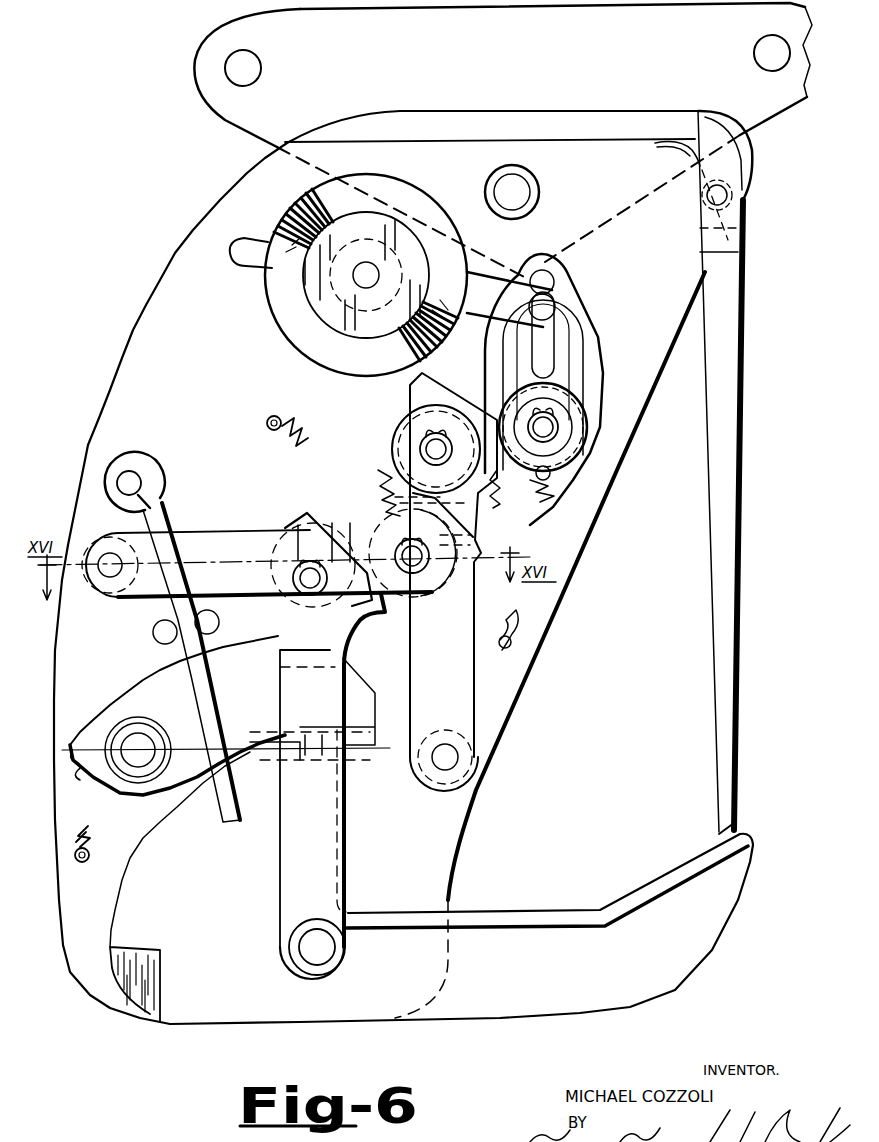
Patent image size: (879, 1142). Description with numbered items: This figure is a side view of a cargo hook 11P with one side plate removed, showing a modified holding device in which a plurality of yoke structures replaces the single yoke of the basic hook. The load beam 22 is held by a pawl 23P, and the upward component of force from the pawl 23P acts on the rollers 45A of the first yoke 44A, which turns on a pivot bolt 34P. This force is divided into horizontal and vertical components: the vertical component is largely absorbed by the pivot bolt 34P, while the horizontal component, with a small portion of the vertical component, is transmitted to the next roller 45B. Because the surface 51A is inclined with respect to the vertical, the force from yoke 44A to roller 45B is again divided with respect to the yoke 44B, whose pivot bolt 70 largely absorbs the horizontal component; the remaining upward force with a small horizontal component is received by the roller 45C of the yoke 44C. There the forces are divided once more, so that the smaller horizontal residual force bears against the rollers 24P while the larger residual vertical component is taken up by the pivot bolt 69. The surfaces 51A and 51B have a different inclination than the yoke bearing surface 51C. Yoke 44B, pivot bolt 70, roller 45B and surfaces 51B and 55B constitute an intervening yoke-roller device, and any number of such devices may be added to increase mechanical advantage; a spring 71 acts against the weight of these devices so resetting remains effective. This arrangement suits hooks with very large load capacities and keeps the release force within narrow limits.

The load beam 22 is at (520, 882).
The hook 11P is at (662, 524).
The rollers 24P is at (575, 395).
The roller 45C is at (410, 430).
The yoke 44C is at (465, 660).
The pivot bolt 69 is at (458, 762).
The surface 51B is at (385, 480).
The spring 71 is at (292, 440).
The roller 45B is at (372, 498).
The surface 51A is at (382, 594).
The yoke's bearing surface 51C is at (499, 501).
The surface 55B is at (528, 512).
The yoke 44B is at (245, 558).
The pivot bolt 70 is at (100, 590).
The rollers 45A is at (288, 592).
The pawl 23P is at (262, 700).
The pivot bolt 34P is at (172, 712).
The yoke 44A is at (334, 846).